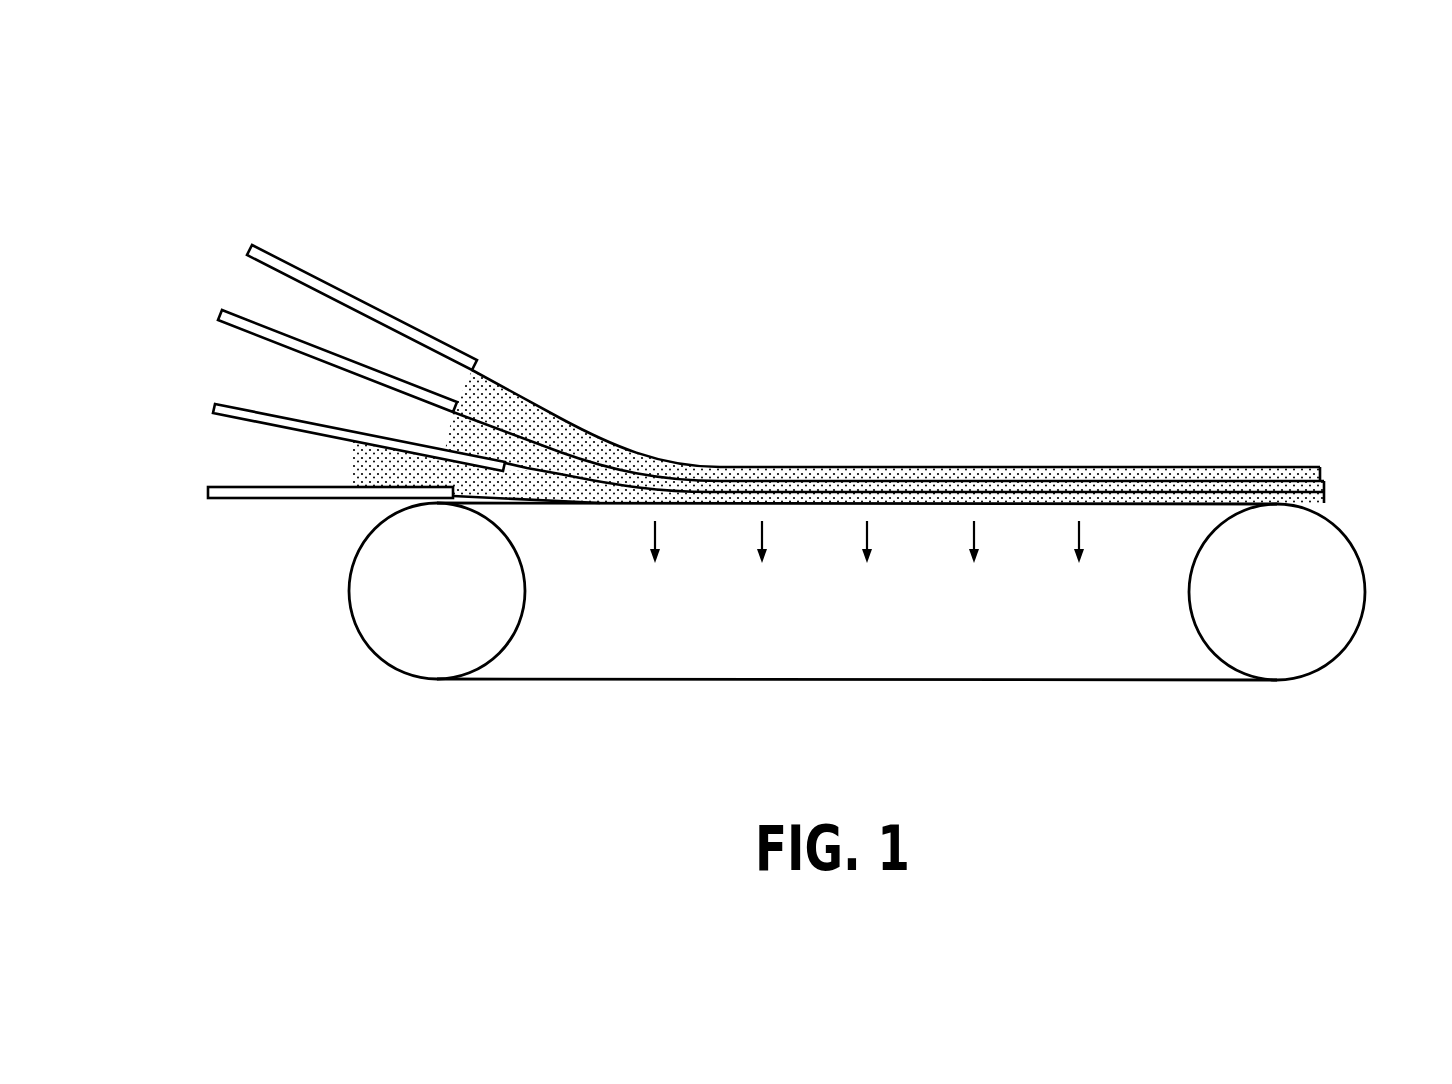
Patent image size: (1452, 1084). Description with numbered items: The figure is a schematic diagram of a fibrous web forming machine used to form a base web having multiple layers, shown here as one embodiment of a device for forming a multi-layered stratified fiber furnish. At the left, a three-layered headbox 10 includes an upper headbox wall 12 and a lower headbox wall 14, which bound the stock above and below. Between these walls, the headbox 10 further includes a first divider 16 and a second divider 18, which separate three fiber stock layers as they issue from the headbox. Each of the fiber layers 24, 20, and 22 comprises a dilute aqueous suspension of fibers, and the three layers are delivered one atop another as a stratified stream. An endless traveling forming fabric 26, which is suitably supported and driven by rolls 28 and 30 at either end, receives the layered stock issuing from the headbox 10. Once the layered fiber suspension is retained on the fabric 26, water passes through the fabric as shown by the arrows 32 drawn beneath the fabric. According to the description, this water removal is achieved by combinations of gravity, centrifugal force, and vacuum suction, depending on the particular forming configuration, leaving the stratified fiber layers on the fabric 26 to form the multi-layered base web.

The three-layered headbox 10 is at (386, 257).
The upper headbox wall 12 is at (468, 360).
The lower headbox wall 14 is at (233, 499).
The first divider 16 is at (230, 310).
The second divider 18 is at (215, 403).
The fiber layer 20 is at (598, 467).
The fiber layer 22 is at (720, 467).
The fiber layer 24 is at (587, 493).
The forming fabric 26 is at (1027, 680).
The roll 28 is at (398, 640).
The roll 30 is at (1353, 595).
The arrows 32 is at (868, 528).